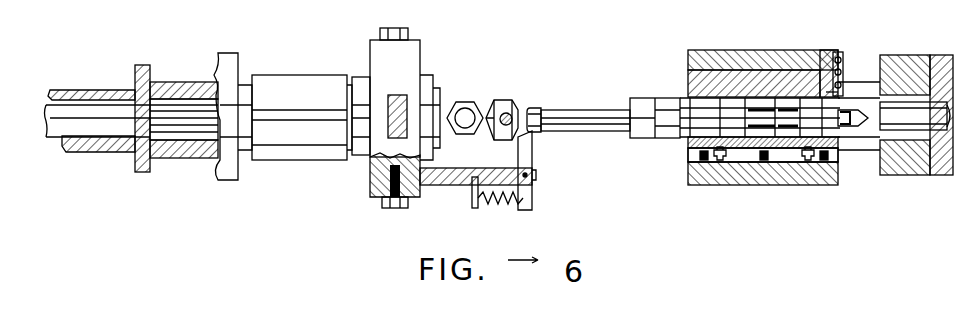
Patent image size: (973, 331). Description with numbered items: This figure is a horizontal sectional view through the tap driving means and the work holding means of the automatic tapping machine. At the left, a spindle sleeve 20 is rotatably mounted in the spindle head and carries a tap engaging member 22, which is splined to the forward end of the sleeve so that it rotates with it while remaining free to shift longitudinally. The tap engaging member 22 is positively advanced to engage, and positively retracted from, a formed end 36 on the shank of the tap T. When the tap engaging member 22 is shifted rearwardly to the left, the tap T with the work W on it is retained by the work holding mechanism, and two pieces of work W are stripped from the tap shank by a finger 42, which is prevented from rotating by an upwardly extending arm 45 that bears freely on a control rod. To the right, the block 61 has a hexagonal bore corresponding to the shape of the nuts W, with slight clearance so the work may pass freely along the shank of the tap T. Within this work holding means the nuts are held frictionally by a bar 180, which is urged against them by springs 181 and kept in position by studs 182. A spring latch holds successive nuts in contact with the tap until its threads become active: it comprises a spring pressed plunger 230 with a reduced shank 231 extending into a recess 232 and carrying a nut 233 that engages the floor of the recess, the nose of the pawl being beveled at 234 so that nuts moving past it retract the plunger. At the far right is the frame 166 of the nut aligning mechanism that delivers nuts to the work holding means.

The spindle sleeve 20 is at (117, 94).
The tap engaging member 22 is at (188, 118).
The upwardly extending arm 45 is at (388, 112).
The formed end 36 is at (548, 110).
The finger 42 is at (530, 153).
The block 61 is at (690, 175).
The bar 180 is at (694, 157).
The springs 181 is at (704, 162).
The studs 182 is at (720, 163).
The spring pressed plunger 230 is at (842, 88).
The reduced shank 231 is at (838, 55).
The recess 232 is at (842, 74).
The nut 233 is at (842, 62).
The beveled nose 234 is at (852, 130).
The frame 166 is at (908, 175).
The work W is at (468, 104).
The tap T is at (600, 108).